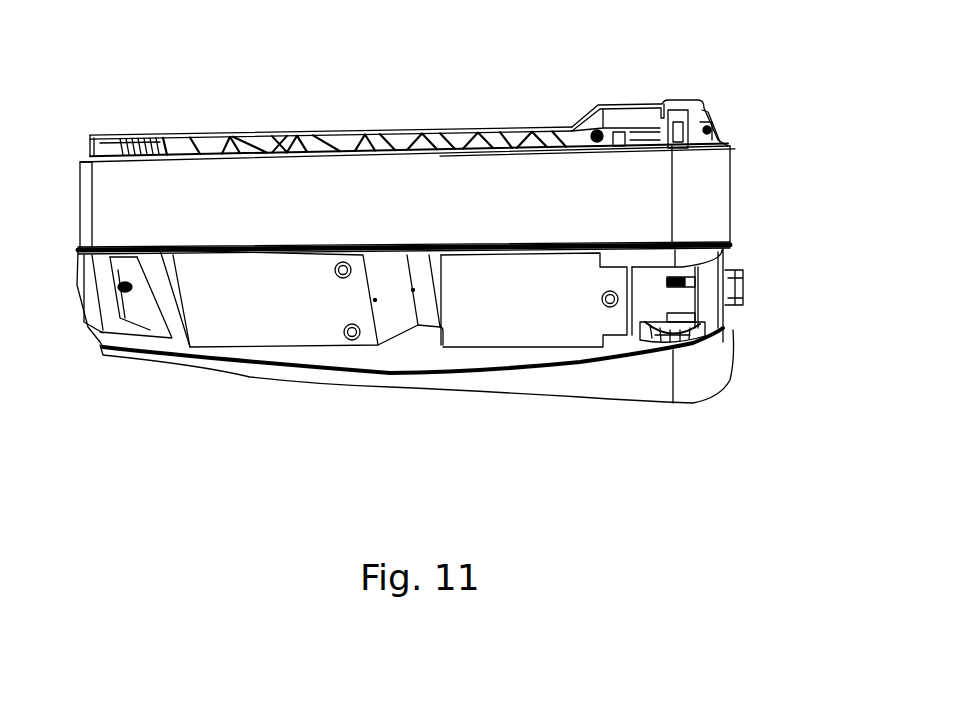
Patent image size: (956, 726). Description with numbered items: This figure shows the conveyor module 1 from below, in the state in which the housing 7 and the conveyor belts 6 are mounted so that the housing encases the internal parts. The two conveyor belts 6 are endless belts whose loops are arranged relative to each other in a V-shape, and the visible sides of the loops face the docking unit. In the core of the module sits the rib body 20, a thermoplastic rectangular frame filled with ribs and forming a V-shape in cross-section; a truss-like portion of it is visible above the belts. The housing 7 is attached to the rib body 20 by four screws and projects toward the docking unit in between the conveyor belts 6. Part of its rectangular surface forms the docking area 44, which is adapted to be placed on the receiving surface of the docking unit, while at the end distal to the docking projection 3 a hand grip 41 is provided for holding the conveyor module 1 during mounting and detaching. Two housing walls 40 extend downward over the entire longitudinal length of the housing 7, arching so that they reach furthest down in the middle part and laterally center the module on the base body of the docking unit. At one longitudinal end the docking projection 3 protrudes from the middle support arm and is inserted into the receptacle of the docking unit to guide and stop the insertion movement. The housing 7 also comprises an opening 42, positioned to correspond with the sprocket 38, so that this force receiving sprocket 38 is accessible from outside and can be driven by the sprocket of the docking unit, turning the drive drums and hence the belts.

The conveyor module 1 is at (506, 104).
The rib body 20 is at (387, 140).
The housing walls 40 is at (241, 247).
The conveyor belts 6 is at (693, 197).
The docking projection 3 is at (742, 290).
The sprocket 38 is at (713, 340).
The hand grip 41 is at (137, 305).
The housing 7 is at (307, 313).
The docking area 44 is at (512, 317).
The opening 42 is at (640, 338).